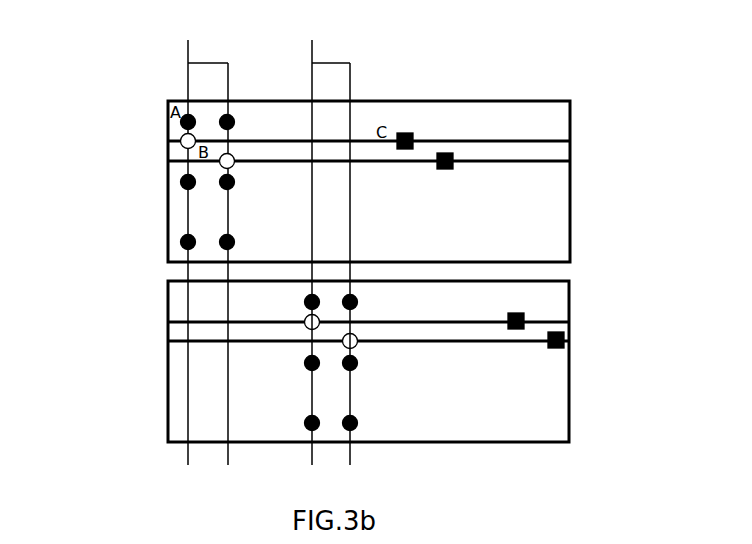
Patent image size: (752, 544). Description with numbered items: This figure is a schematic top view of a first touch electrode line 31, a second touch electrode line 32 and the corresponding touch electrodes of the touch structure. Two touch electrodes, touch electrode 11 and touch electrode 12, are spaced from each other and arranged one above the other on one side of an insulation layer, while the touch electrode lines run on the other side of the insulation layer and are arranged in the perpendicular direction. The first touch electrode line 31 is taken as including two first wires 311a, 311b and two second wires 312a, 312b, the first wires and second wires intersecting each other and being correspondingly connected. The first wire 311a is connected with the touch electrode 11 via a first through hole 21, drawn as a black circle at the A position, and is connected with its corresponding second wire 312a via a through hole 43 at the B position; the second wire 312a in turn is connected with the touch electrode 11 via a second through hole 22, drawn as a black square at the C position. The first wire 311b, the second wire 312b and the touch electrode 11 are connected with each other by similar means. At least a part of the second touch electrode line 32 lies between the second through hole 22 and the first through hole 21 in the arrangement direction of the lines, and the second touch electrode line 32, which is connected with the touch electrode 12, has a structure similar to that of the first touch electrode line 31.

The touch electrode 11 is at (572, 111).
The touch electrode 12 is at (570, 390).
The first through hole 21 is at (195, 113).
The second through hole 22 is at (411, 134).
The first touch electrode line 31 is at (62, 245).
The second touch electrode line 32 is at (329, 241).
The through hole 43 is at (222, 136).
The first wire 311a is at (187, 82).
The first wire 311b is at (229, 213).
The second wire 312a is at (184, 143).
The second wire 312b is at (178, 163).